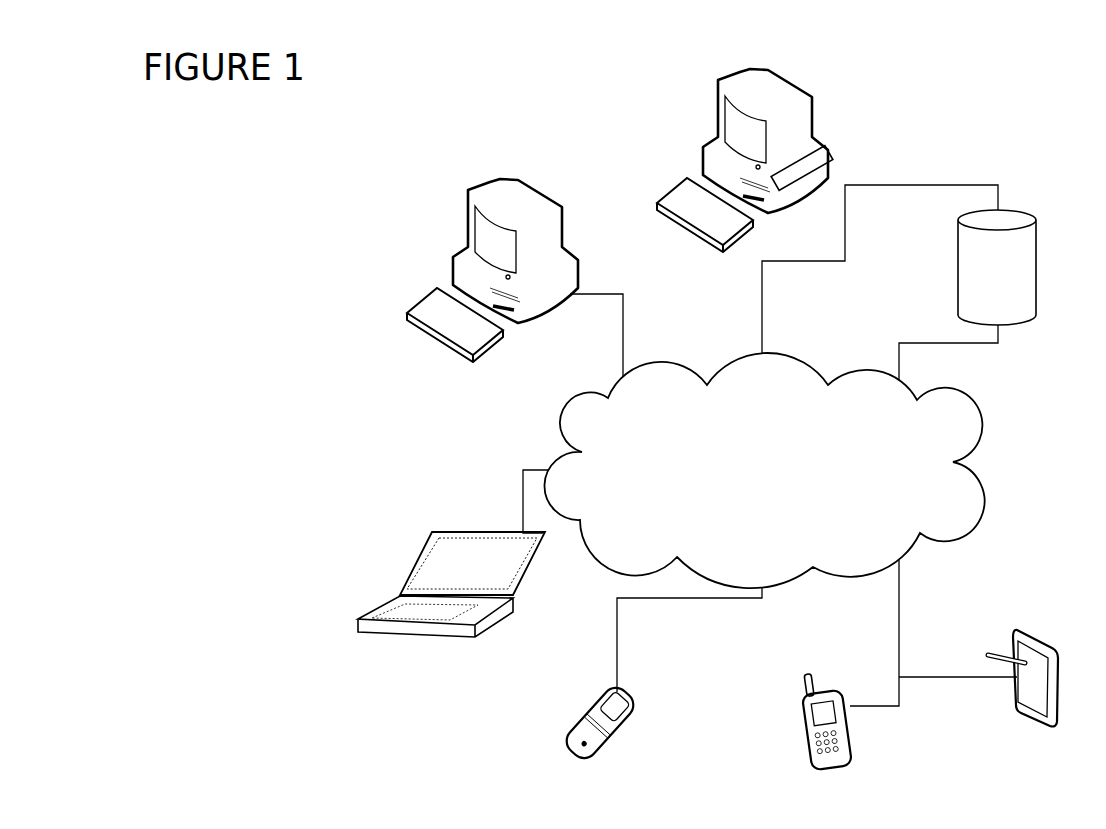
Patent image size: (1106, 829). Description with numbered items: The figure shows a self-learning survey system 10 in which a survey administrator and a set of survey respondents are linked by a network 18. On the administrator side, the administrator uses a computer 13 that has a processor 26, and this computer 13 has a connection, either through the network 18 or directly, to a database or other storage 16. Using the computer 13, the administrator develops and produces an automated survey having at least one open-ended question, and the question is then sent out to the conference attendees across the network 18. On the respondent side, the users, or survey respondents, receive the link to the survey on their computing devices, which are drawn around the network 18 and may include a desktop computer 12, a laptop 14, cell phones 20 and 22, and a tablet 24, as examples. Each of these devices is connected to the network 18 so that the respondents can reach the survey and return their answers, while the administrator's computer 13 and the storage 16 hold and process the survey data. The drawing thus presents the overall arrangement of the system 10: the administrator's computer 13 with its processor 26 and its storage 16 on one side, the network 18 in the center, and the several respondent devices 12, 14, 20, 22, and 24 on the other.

The system 10 is at (892, 56).
The desktop computer 12 is at (477, 184).
The computer 13 is at (727, 74).
The laptop 14 is at (432, 532).
The database or other storage 16 is at (997, 267).
The network 18 is at (764, 470).
The cell phone 20 is at (612, 690).
The cell phone 22 is at (806, 700).
The tablet 24 is at (1017, 680).
The processor 26 is at (833, 155).